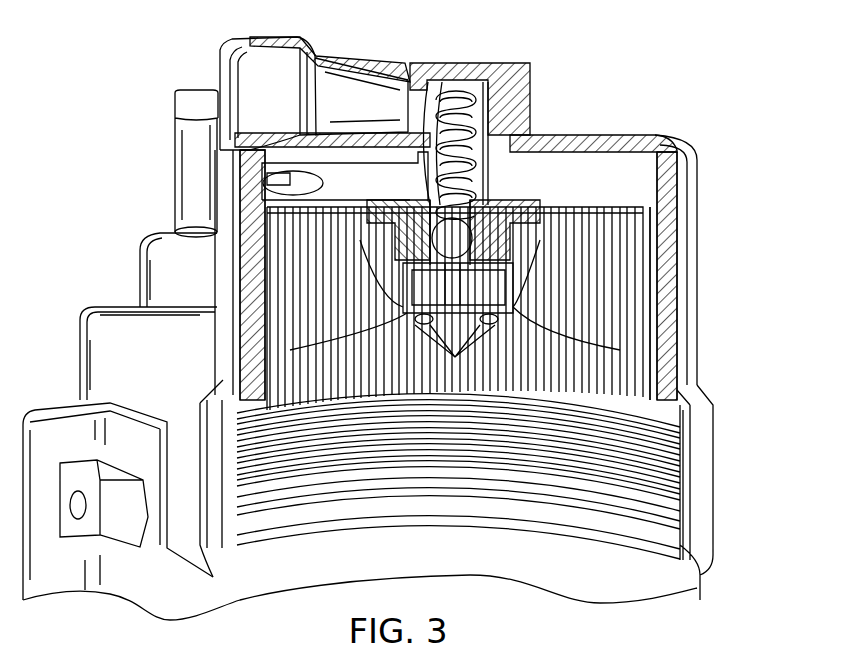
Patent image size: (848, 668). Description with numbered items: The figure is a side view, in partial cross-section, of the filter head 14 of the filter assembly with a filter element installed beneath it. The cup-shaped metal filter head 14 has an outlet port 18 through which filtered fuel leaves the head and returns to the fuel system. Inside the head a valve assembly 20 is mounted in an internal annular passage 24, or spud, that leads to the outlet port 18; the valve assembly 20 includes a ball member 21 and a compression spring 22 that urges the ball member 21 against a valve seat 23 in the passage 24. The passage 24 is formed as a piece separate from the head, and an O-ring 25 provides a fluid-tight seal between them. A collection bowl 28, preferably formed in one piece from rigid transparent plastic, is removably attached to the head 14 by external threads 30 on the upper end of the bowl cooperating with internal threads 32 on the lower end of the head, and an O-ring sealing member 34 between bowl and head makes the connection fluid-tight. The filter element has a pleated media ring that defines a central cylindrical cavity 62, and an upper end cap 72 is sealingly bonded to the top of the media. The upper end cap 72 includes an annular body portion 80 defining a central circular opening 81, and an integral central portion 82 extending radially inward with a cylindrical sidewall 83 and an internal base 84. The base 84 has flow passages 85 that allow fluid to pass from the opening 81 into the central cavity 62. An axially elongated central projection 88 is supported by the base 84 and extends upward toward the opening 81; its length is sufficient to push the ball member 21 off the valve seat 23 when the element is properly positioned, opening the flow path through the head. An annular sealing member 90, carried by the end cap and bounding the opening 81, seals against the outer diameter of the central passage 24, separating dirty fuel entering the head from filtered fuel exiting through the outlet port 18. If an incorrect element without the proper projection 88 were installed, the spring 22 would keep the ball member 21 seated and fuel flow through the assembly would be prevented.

The filter head 14 is at (697, 232).
The outlet port 18 is at (218, 78).
The valve assembly 20 is at (514, 84).
The ball member 21 is at (470, 240).
The compression spring 22 is at (478, 145).
The valve seat 23 is at (440, 285).
The internal annular passage 24 is at (255, 200).
The O-ring 25 is at (405, 155).
The collection bowl 28 is at (690, 587).
The external threads 30 is at (673, 410).
The internal threads 32 is at (680, 445).
The O-ring sealing member 34 is at (673, 513).
The central cylindrical cavity 62 is at (503, 357).
The upper end cap 72 is at (692, 228).
The annular body portion 80 is at (668, 146).
The central circular opening 81 is at (590, 200).
The central portion 82 is at (505, 330).
The cylindrical sidewall 83 is at (520, 266).
The internal base 84 is at (408, 327).
The flow passages 85 is at (455, 357).
The central projection 88 is at (660, 302).
The sealing member 90 is at (235, 237).